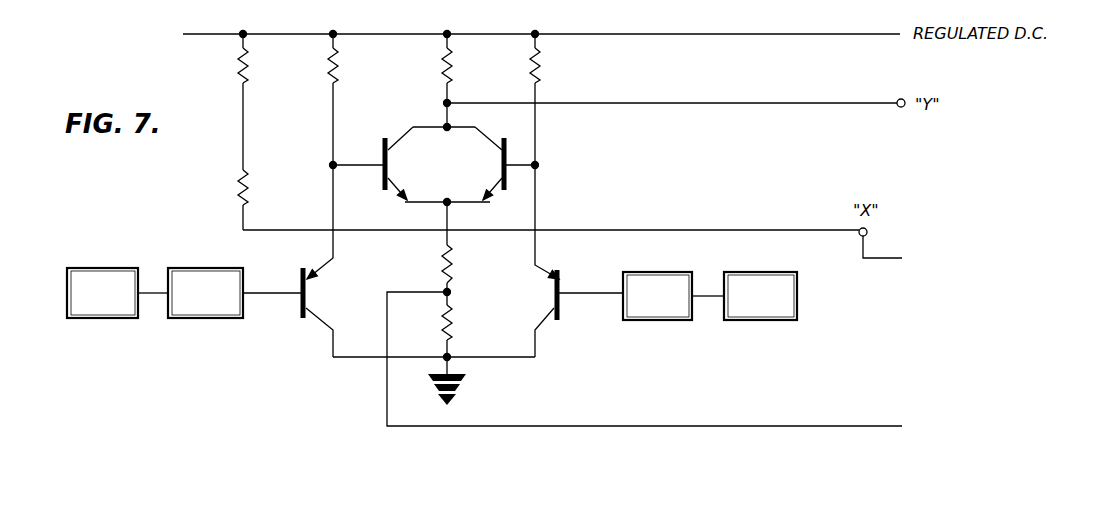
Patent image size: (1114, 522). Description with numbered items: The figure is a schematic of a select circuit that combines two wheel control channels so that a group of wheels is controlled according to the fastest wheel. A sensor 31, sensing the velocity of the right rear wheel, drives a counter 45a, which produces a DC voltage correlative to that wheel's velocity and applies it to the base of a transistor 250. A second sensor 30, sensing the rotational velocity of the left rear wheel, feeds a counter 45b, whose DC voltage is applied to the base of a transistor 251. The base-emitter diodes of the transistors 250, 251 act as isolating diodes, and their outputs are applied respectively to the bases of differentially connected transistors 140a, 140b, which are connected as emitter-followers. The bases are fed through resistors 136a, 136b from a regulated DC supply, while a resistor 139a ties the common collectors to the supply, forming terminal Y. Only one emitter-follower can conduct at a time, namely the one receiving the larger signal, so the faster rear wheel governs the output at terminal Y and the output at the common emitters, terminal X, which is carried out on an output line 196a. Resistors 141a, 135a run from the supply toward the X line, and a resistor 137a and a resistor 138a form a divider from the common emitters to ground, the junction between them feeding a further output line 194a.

The resistor 141a is at (238, 70).
The resistor 136a is at (338, 70).
The resistor 139a is at (452, 70).
The resistor 136b is at (540, 70).
The resistor 135a is at (238, 190).
The resistor 137a is at (443, 260).
The resistor 138a is at (451, 321).
The differentially connected transistor 140a is at (400, 199).
The differentially connected transistor 140b is at (490, 199).
The transistor 250 is at (300, 319).
The transistor 251 is at (558, 320).
The sensor 31 is at (117, 293).
The counter 45a is at (205, 293).
The counter 45b is at (673, 296).
The sensor 30 is at (760, 296).
The output line 194a is at (666, 364).
The output line 196a is at (904, 252).